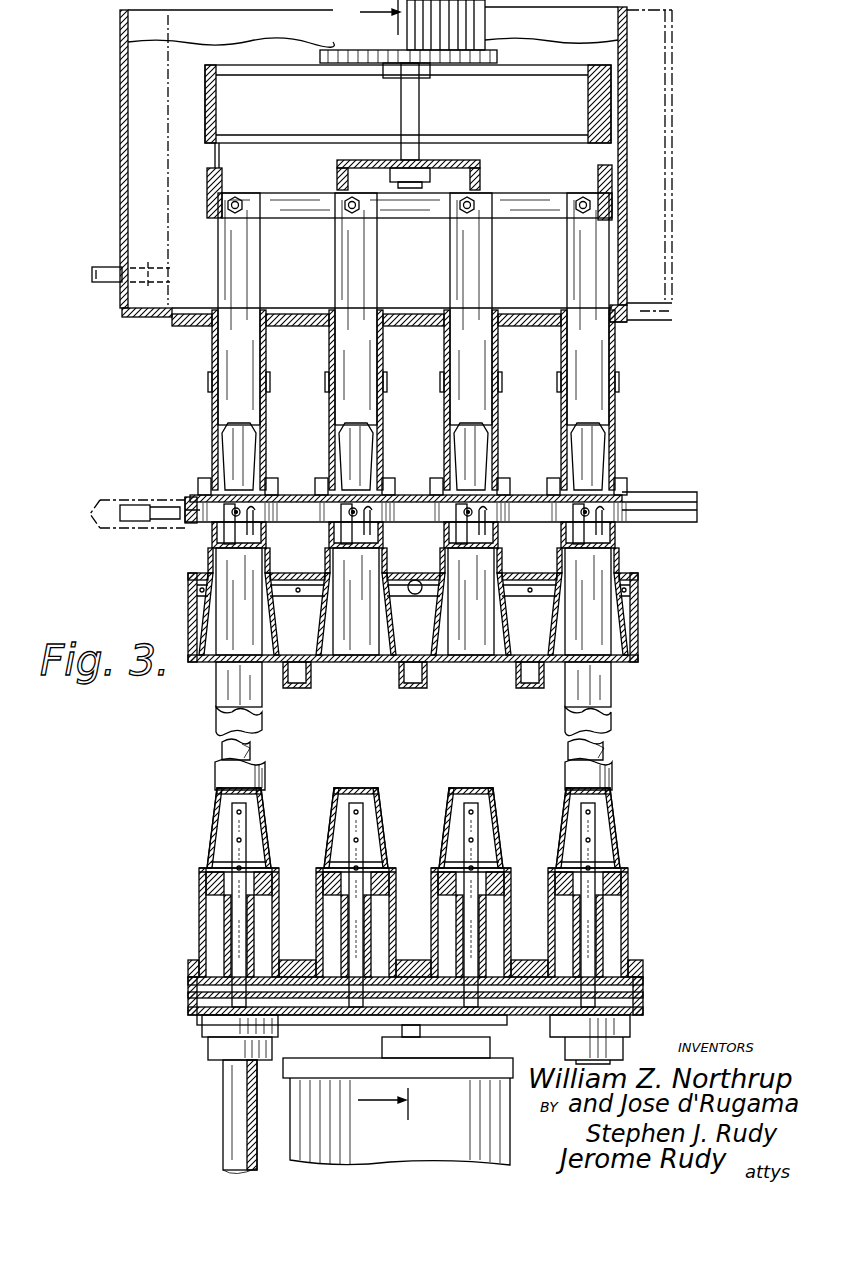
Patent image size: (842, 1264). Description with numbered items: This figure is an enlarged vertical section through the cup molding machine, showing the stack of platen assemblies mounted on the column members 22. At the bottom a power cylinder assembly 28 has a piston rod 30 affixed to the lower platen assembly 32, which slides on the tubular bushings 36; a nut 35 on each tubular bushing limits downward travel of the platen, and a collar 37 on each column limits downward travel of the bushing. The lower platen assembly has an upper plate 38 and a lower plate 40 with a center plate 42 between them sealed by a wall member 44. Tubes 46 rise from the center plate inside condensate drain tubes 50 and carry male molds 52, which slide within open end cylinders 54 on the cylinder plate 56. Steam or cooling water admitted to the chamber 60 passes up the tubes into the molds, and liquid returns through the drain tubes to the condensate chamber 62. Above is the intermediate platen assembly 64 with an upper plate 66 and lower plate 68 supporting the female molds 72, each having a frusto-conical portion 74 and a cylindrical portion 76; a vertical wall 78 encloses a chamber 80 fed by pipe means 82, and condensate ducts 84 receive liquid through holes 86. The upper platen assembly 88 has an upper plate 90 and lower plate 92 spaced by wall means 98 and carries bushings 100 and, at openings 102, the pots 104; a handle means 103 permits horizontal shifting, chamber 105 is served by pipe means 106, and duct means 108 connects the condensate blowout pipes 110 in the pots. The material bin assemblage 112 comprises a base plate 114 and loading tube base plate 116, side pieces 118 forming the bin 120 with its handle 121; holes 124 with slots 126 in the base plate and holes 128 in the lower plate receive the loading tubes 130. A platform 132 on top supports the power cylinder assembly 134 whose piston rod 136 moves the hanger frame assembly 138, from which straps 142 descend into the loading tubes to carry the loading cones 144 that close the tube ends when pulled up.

The column member 22 is at (225, 760).
The power cylinder assembly 28 is at (290, 1126).
The piston rod 30 is at (440, 1028).
The lower platen assembly 32 is at (175, 993).
The nut 35 is at (205, 1028).
The tubular bushing 36 is at (612, 698).
The collar 37 is at (210, 1052).
The upper plate 38 is at (190, 980).
The lower plate 40 is at (190, 1012).
The center plate 42 is at (308, 1015).
The wall member 44 is at (190, 995).
The tube 46 is at (232, 820).
The condensate drain tube 50 is at (212, 918).
The male mold 52 is at (445, 793).
The open end cylinder 54 is at (203, 890).
The cylinder plate 56 is at (640, 965).
The chamber 60 is at (530, 1015).
The condensate chamber 62 is at (505, 988).
The intermediate platen assembly 64 is at (650, 608).
The upper plate 66 is at (188, 577).
The lower plate 68 is at (190, 660).
The female mold 72 is at (270, 668).
The frusto-conical portion 74 is at (330, 635).
The cylindrical portion 76 is at (340, 578).
The vertical wall 78 is at (190, 600).
The chamber 80 is at (420, 640).
The pipe means 82 is at (414, 596).
The condensate duct 84 is at (405, 690).
The hole 86 is at (520, 672).
The upper platen assembly 88 is at (170, 500).
The upper plate 90 is at (200, 500).
The lower plate 92 is at (210, 522).
The wall means 98 is at (190, 500).
The bushing 100 is at (290, 500).
The opening 102 is at (325, 540).
The handle means 103 is at (130, 507).
The molding head or pot 104 is at (370, 532).
The chamber 105 is at (222, 525).
The pipe means 106 is at (462, 510).
The duct means 108 is at (490, 505).
The condensate blowout pipe 110 is at (570, 535).
The material bin assemblage 112 is at (676, 318).
The base plate 114 is at (120, 312).
The loading tube base plate 116 is at (200, 328).
The side piece 118 is at (662, 108).
The bin 120 is at (680, 250).
The handle 121 is at (100, 270).
The hole 124 is at (295, 300).
The slot 126 is at (299, 272).
The hole 128 is at (328, 347).
The loading tube 130 is at (446, 392).
The platform 132 is at (506, 148).
The power cylinder assembly 134 is at (500, 22).
The piston rod 136 is at (420, 100).
The hanger frame assembly 138 is at (322, 180).
The strap 142 is at (372, 262).
The loading cone 144 is at (380, 448).